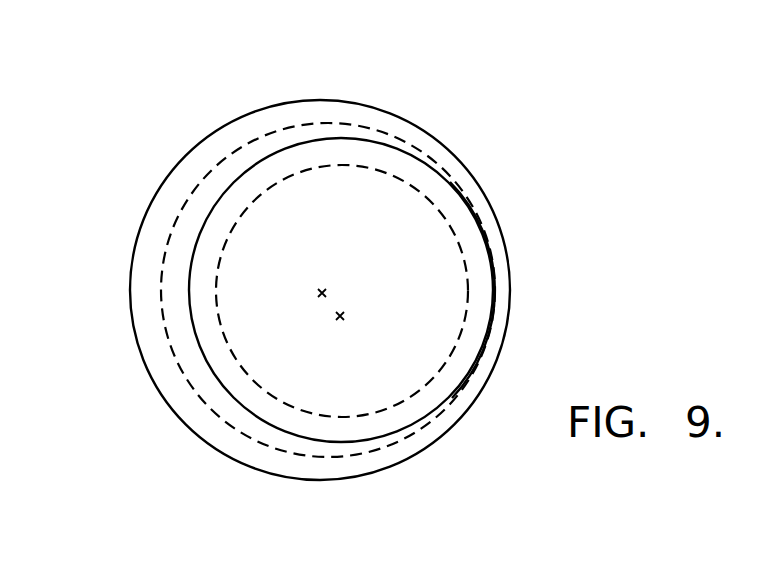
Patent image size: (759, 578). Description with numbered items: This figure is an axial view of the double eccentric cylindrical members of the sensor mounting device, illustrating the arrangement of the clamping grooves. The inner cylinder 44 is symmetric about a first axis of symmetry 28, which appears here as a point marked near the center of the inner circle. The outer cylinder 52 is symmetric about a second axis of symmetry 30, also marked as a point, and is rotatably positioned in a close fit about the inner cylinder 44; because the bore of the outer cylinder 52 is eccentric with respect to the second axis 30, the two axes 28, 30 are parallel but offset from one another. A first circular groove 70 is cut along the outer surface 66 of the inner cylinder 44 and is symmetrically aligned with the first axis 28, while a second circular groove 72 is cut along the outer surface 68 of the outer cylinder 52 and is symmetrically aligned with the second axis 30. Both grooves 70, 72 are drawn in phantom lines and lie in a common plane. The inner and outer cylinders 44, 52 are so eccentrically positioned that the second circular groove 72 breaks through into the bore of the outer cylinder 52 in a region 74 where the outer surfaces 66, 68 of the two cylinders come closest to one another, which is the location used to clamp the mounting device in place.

The outer surface of the outer cylinder 68 is at (318, 100).
The second circular groove 72 is at (165, 253).
The outer surface of the inner cylinder 66 is at (212, 213).
The first circular groove 70 is at (372, 166).
The region 74 is at (473, 200).
The outer cylinder 52 is at (180, 315).
The inner cylinder 44 is at (285, 347).
The second axis of symmetry 30 is at (322, 289).
The first axis of symmetry 28 is at (341, 315).